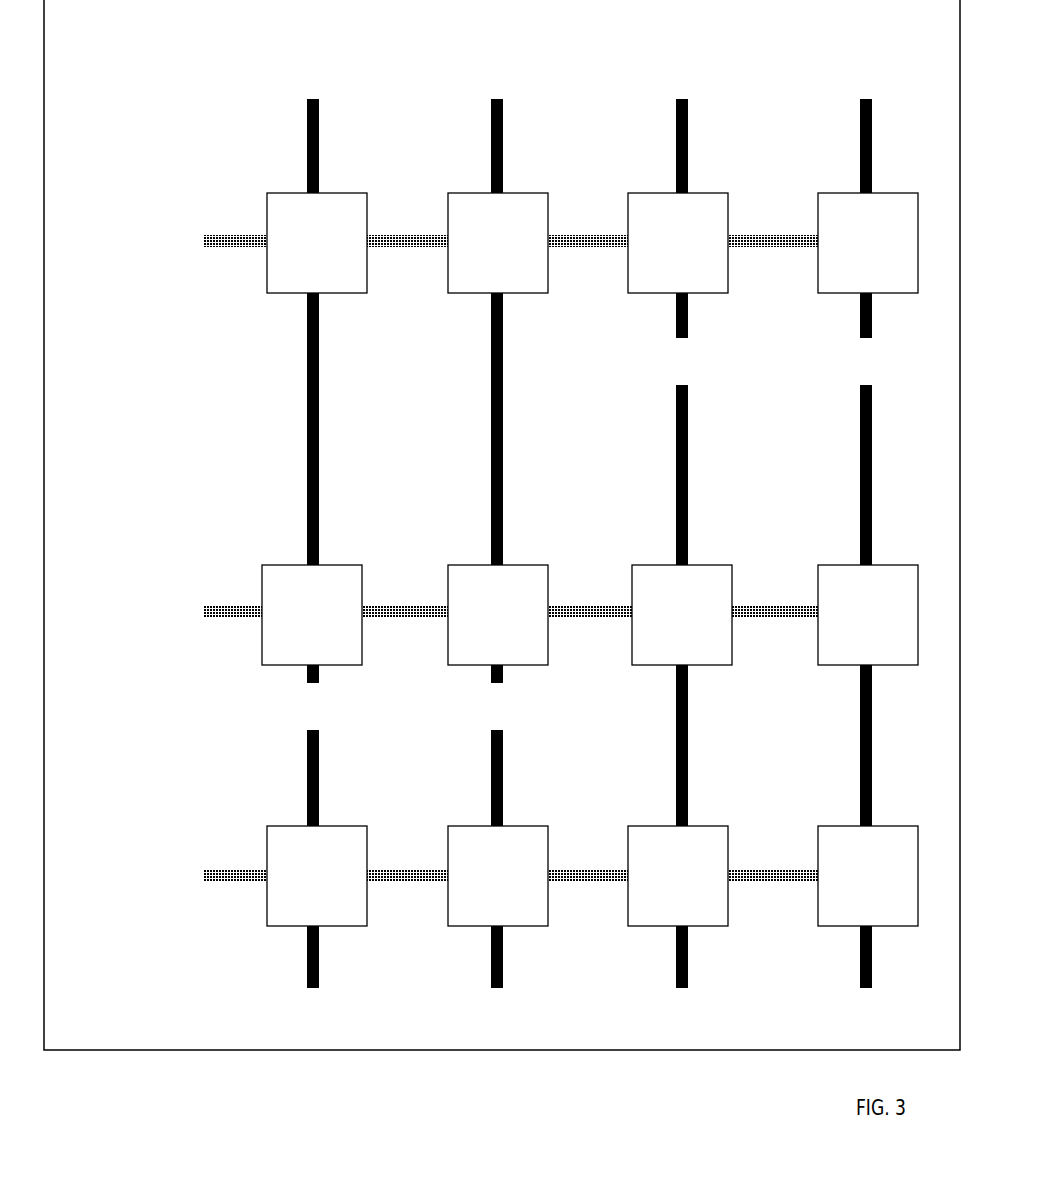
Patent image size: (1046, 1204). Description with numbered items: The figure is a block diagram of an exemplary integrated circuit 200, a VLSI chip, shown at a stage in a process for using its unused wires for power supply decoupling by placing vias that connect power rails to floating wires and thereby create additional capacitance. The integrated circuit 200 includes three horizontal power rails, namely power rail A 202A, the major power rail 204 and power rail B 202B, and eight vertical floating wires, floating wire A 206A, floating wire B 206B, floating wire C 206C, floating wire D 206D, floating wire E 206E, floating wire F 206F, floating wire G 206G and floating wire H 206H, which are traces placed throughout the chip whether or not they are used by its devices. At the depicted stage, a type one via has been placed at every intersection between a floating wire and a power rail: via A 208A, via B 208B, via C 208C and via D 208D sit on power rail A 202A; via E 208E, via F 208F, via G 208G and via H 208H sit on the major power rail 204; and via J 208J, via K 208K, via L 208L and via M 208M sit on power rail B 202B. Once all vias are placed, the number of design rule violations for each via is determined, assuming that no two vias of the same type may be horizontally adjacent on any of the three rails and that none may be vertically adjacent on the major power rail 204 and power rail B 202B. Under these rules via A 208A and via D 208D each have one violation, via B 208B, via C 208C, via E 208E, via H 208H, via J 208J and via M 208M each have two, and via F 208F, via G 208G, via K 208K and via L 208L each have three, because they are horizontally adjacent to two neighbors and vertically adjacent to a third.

The integrated circuit 200 is at (502, 525).
The power rail A 202A is at (442, 210).
The power rail B 202B is at (442, 843).
The major power rail 204 is at (448, 572).
The floating wire A 206A is at (254, 374).
The floating wire B 206B is at (438, 374).
The floating wire C 206C is at (623, 201).
The floating wire D 206D is at (807, 201).
The floating wire E 206E is at (623, 678).
The floating wire F 206F is at (807, 678).
The floating wire G 206G is at (254, 859).
The floating wire H 206H is at (438, 859).
The type 1 via A 208A is at (317, 243).
The type 1 via B 208B is at (498, 243).
The type 1 via C 208C is at (678, 243).
The type 1 via D 208D is at (868, 243).
The type 1 via E 208E is at (312, 615).
The type 1 via F 208F is at (498, 615).
The type 1 via G 208G is at (682, 615).
The type 1 via H 208H is at (868, 615).
The type 1 via J 208J is at (317, 876).
The type 1 via K 208K is at (498, 876).
The type 1 via L 208L is at (678, 876).
The type 1 via M 208M is at (868, 876).